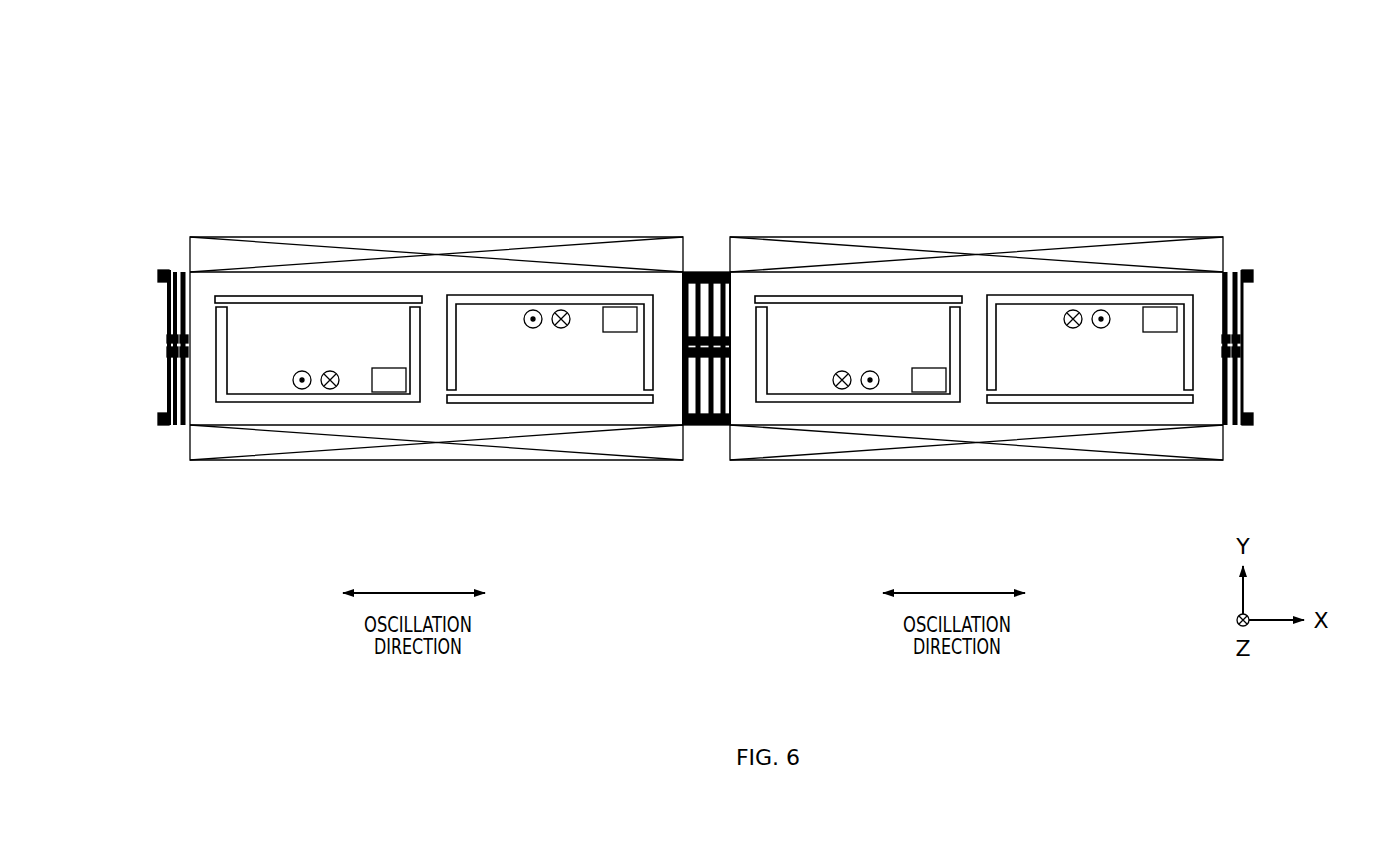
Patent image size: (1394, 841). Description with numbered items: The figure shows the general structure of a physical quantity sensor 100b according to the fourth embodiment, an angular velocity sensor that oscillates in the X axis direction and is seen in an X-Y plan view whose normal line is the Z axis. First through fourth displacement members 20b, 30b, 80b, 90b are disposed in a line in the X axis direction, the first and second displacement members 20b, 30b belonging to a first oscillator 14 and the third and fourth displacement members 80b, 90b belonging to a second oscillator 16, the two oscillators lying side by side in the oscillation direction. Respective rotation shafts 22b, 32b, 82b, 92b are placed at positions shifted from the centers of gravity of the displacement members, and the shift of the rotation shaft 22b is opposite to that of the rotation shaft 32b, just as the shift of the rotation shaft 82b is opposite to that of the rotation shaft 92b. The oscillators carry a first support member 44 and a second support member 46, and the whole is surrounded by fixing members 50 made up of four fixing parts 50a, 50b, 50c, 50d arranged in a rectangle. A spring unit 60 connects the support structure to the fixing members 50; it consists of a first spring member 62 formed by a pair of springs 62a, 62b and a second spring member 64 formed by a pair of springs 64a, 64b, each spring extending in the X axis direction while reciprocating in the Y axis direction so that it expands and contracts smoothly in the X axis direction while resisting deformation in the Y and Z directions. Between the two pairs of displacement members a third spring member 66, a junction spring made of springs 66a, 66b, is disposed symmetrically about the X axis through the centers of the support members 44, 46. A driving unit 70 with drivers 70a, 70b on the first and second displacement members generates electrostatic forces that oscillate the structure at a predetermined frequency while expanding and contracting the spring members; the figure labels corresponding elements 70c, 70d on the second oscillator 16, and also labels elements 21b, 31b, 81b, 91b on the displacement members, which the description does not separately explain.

The physical quantity sensor 100b is at (690, 122).
The first oscillator 14 is at (218, 410).
The second oscillator 16 is at (1226, 415).
The first displacement member 20b is at (280, 305).
The detection frame of first vibrating body 21b is at (283, 393).
The rotation shaft 22b is at (205, 312).
The second displacement member 30b is at (483, 310).
The beam portion of second vibrating body 31b is at (583, 310).
The rotation shaft 32b is at (446, 385).
The first support member 44 is at (652, 290).
The second support member 46 is at (1192, 290).
The fixing members 50 is at (126, 320).
The fixing part 50a is at (158, 275).
The fixing part 50b is at (162, 426).
The fixing part 50c is at (1248, 272).
The fixing part 50d is at (1250, 418).
The spring unit 60 is at (1338, 340).
The first spring member 62 is at (1246, 333).
The spring 62a is at (1238, 307).
The spring 62b is at (170, 308).
The second spring member 64 is at (1246, 368).
The spring 64a is at (1232, 390).
The spring 64b is at (173, 378).
The third spring member 66 is at (706, 190).
The spring 66a is at (702, 270).
The spring 66b is at (706, 427).
The driving unit 70 is at (436, 221).
The driver 70a is at (353, 247).
The driver 70b is at (592, 450).
The elastic beam 70c is at (893, 247).
The elastic beam 70d is at (1132, 450).
The third displacement member 80b is at (820, 305).
The detection frame of third vibrating body 81b is at (823, 393).
The rotation shaft 82b is at (748, 312).
The fourth displacement member 90b is at (1022, 310).
The beam portion of fourth vibrating body 91b is at (1122, 310).
The rotation shaft 92b is at (986, 385).